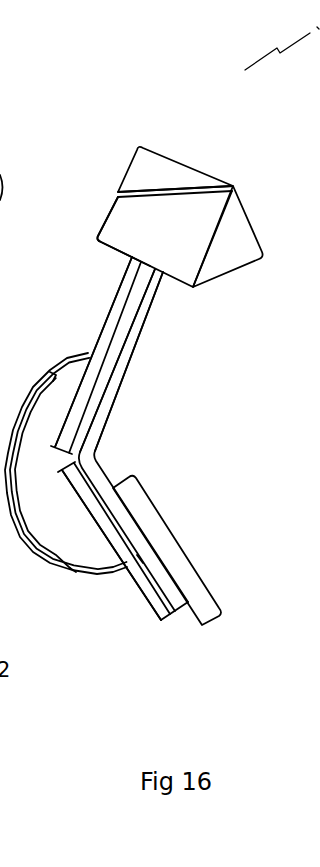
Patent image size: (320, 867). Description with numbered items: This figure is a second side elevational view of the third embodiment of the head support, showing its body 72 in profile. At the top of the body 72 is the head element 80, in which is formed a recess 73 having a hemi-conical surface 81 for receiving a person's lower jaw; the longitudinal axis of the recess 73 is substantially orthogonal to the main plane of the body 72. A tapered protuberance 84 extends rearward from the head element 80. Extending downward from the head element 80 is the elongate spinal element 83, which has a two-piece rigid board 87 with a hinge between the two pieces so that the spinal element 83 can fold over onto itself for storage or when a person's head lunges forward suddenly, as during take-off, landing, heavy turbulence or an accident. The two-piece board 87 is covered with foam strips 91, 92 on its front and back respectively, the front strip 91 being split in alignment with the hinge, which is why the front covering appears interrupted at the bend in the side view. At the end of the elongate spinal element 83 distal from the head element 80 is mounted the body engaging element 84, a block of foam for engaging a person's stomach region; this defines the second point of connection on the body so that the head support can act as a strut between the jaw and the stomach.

The body 72 is at (105, 253).
The recess 73 is at (177, 173).
The head element 80 is at (128, 215).
The hemi-conical surface 81 is at (153, 185).
The elongate spinal element 83 is at (137, 340).
The tapered protuberance 84 is at (242, 237).
The two-piece rigid board 87 is at (83, 480).
The front foam strip 91 is at (112, 323).
The back foam strip 92 is at (117, 377).